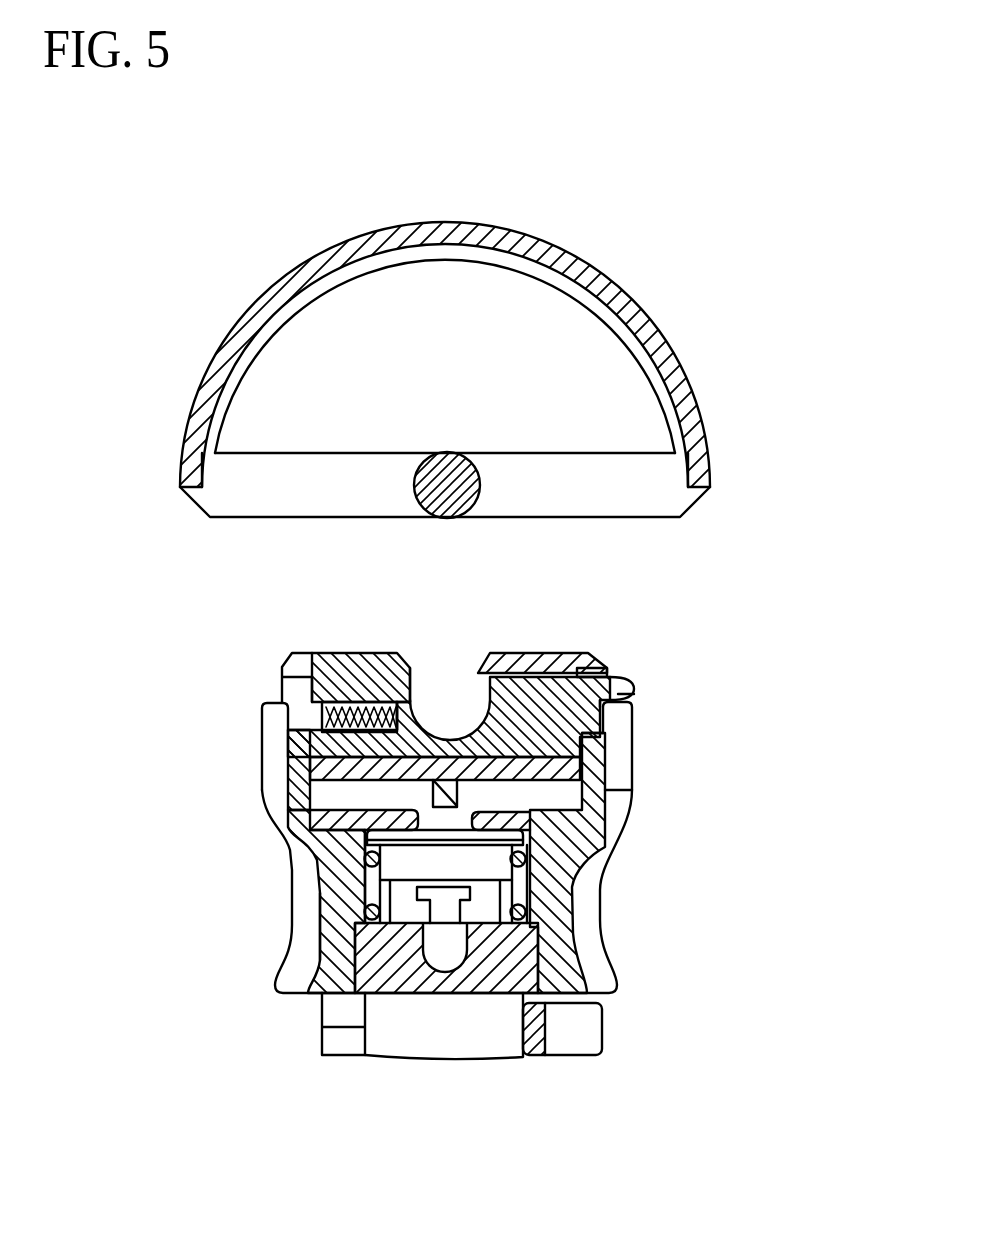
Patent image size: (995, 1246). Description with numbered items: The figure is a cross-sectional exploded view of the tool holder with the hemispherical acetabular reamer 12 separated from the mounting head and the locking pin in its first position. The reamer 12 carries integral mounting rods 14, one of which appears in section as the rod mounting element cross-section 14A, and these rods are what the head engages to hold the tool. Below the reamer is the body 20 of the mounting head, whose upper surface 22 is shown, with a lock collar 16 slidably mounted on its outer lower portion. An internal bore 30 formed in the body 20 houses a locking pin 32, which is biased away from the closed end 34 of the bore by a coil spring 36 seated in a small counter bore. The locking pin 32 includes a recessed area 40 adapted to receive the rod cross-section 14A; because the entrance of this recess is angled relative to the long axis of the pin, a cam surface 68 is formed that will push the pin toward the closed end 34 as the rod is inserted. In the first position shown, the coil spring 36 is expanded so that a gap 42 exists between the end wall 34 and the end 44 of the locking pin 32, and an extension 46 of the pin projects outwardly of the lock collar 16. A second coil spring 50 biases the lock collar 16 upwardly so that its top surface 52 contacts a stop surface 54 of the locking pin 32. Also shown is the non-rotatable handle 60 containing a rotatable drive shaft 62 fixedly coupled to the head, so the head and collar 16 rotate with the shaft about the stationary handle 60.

The acetabular reamer 12 is at (543, 242).
The rods 14 is at (637, 493).
The rod mounting element cross-section 14A is at (423, 484).
The lock collar 16 is at (622, 808).
The body 20 is at (282, 677).
The upper surface 22 is at (525, 653).
The internal bore 30 is at (553, 788).
The locking pin 32 is at (613, 676).
The closed end 34 is at (370, 702).
The coil spring 36 is at (322, 718).
The recessed area 40 is at (455, 708).
The gap 42 is at (372, 782).
The end 44 is at (365, 740).
The extension 46 is at (637, 683).
The coil spring 50 is at (523, 881).
The top surface 52 is at (633, 698).
The stop surface 54 is at (627, 719).
The non-rotatable handle 60 is at (588, 1041).
The rotatable drive shaft 62 is at (442, 1030).
The cam surface 68 is at (445, 712).